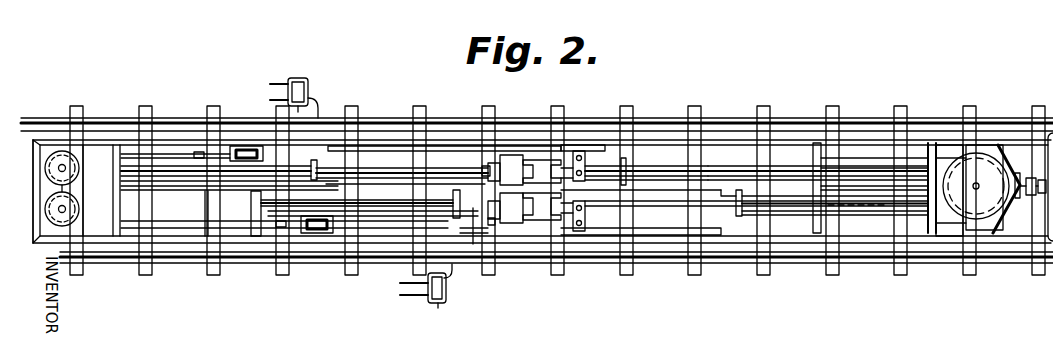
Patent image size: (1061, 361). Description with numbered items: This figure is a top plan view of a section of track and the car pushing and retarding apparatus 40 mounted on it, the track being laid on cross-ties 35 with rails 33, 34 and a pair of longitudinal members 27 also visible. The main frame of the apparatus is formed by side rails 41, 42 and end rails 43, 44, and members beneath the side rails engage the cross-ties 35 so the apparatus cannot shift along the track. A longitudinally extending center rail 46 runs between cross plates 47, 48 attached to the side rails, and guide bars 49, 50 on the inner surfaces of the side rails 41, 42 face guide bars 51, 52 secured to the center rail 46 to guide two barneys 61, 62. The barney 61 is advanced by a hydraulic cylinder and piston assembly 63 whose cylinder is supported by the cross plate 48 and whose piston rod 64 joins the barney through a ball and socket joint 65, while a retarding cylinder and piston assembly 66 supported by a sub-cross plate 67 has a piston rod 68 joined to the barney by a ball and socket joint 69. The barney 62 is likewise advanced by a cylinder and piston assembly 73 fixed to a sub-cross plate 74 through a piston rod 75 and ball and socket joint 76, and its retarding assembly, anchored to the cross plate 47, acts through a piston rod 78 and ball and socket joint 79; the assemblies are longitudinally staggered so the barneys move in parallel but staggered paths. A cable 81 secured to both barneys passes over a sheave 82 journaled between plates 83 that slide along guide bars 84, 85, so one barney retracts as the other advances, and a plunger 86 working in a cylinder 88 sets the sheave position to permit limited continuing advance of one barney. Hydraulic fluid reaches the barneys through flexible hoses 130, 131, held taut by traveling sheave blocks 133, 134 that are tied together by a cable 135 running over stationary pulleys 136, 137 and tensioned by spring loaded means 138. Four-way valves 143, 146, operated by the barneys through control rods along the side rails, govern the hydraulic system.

The rod 27 is at (122, 158).
The rail 33 is at (156, 256).
The rail 34 is at (160, 110).
The cross-ties 35 is at (136, 98).
The car pushing and retarding apparatus 40 is at (230, 236).
The side rail 41 is at (186, 236).
The side rail 42 is at (173, 130).
The end rail 43 is at (24, 218).
The end rail 44 is at (1042, 224).
The center rail 46 is at (184, 184).
The cross plate 47 is at (104, 190).
The cross plate 48 is at (920, 162).
The guide bar 49 is at (646, 228).
The guide bar 50 is at (576, 136).
The guide bar 51 is at (660, 186).
The guide bar 52 is at (431, 172).
The barney 61 is at (531, 218).
The barney 62 is at (517, 150).
The hydraulic cylinder and piston assembly 63 is at (780, 203).
The piston rod 64 is at (718, 206).
The ball and socket joint 65 is at (578, 206).
The retarding cylinder and piston assembly 66 is at (360, 204).
The sub-cross plate 67 is at (242, 192).
The piston rod 68 is at (469, 236).
The ball and socket joint 69 is at (486, 218).
The barney advancing cylinder and piston assembly 73 is at (713, 157).
The sub-cross plate 74 is at (805, 140).
The piston rod 75 is at (598, 160).
The ball and socket joint 76 is at (578, 158).
The piston rod 78 is at (360, 160).
The ball and socket joint 79 is at (477, 156).
The cable 81 is at (857, 150).
The sheave 82 is at (950, 175).
The plates 83 is at (971, 140).
The guide bar 84 is at (945, 224).
The guide bar 85 is at (945, 137).
The plunger 86 is at (1002, 198).
The cylinder 88 is at (1022, 170).
The flexible hoses 130 is at (375, 222).
The flexible hoses 131 is at (385, 138).
The traveling sheave block 133 is at (308, 226).
The traveling sheave block 134 is at (240, 137).
The cable 135 is at (94, 218).
The stationary pulley 136 is at (62, 197).
The stationary pulley 137 is at (54, 142).
The spring loaded means 138 is at (208, 146).
The four-way valve 143 is at (425, 295).
The four-way valve 146 is at (299, 70).